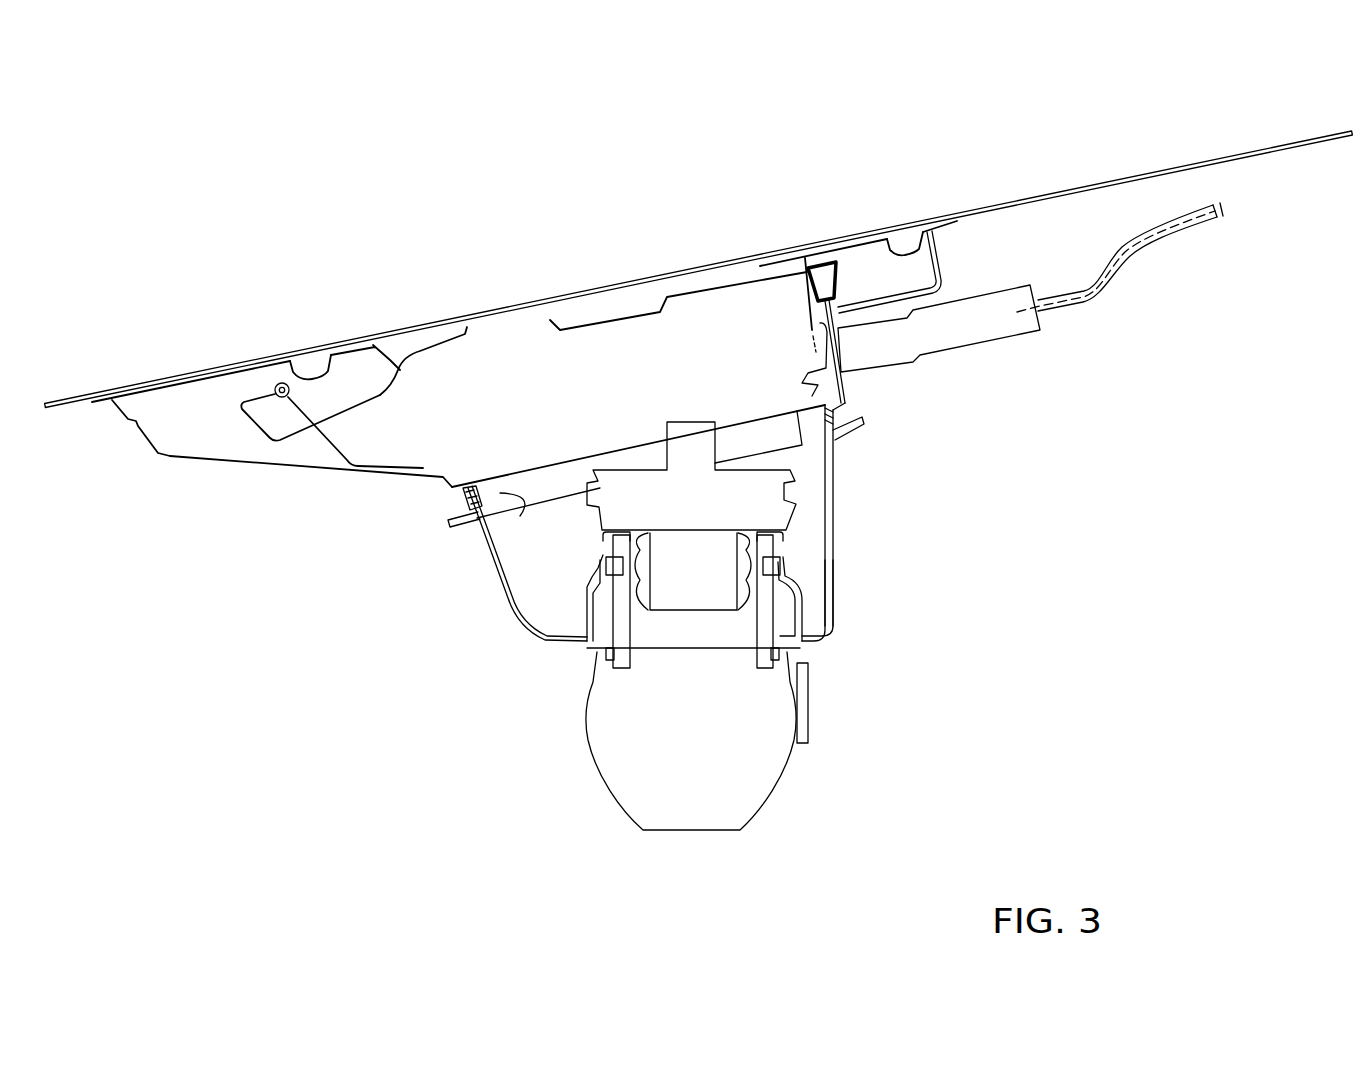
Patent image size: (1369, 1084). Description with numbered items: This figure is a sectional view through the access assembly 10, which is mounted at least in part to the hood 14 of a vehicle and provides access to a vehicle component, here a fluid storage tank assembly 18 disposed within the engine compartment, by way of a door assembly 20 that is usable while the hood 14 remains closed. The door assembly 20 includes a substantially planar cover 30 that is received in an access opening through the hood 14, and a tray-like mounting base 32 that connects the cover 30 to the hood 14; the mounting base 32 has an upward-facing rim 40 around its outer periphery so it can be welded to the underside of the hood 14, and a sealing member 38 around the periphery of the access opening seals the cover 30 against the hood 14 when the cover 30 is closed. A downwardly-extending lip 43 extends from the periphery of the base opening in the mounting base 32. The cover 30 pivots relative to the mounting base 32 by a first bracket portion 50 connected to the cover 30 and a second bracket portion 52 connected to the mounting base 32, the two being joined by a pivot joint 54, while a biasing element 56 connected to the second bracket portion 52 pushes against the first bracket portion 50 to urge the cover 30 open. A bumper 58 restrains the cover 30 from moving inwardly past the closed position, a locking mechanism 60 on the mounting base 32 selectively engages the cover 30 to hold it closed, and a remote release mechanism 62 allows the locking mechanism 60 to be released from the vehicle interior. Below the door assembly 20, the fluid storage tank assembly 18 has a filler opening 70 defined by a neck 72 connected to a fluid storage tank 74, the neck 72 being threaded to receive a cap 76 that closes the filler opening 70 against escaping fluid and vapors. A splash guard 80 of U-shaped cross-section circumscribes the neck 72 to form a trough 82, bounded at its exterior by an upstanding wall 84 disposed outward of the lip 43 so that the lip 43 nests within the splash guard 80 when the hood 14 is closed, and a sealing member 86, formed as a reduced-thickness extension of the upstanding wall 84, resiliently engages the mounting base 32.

The access assembly 10 is at (195, 165).
The hood 14 is at (63, 397).
The fluid storage tank assembly 18 is at (488, 785).
The door assembly 20 is at (503, 242).
The cover 30 is at (668, 270).
The mounting base 32 is at (262, 470).
The sealing member 38 is at (313, 370).
The upward-facing rim 40 is at (100, 397).
The downwardly-extending lip 43 is at (530, 500).
The first bracket portion 50 is at (253, 422).
The second bracket portion 52 is at (333, 470).
The pivot joint 54 is at (280, 384).
The biasing element 56 is at (375, 465).
The bumper 58 is at (840, 280).
The locking mechanism 60 is at (1013, 290).
The remote release mechanism 62 is at (1192, 210).
The filler opening 70 is at (683, 642).
The neck 72 is at (620, 630).
The fluid storage tank 74 is at (773, 787).
The cap 76 is at (780, 527).
The splash guard 80 is at (834, 591).
The trough 82 is at (560, 613).
The upstanding wall 84 is at (503, 590).
The sealing member 86 is at (445, 517).